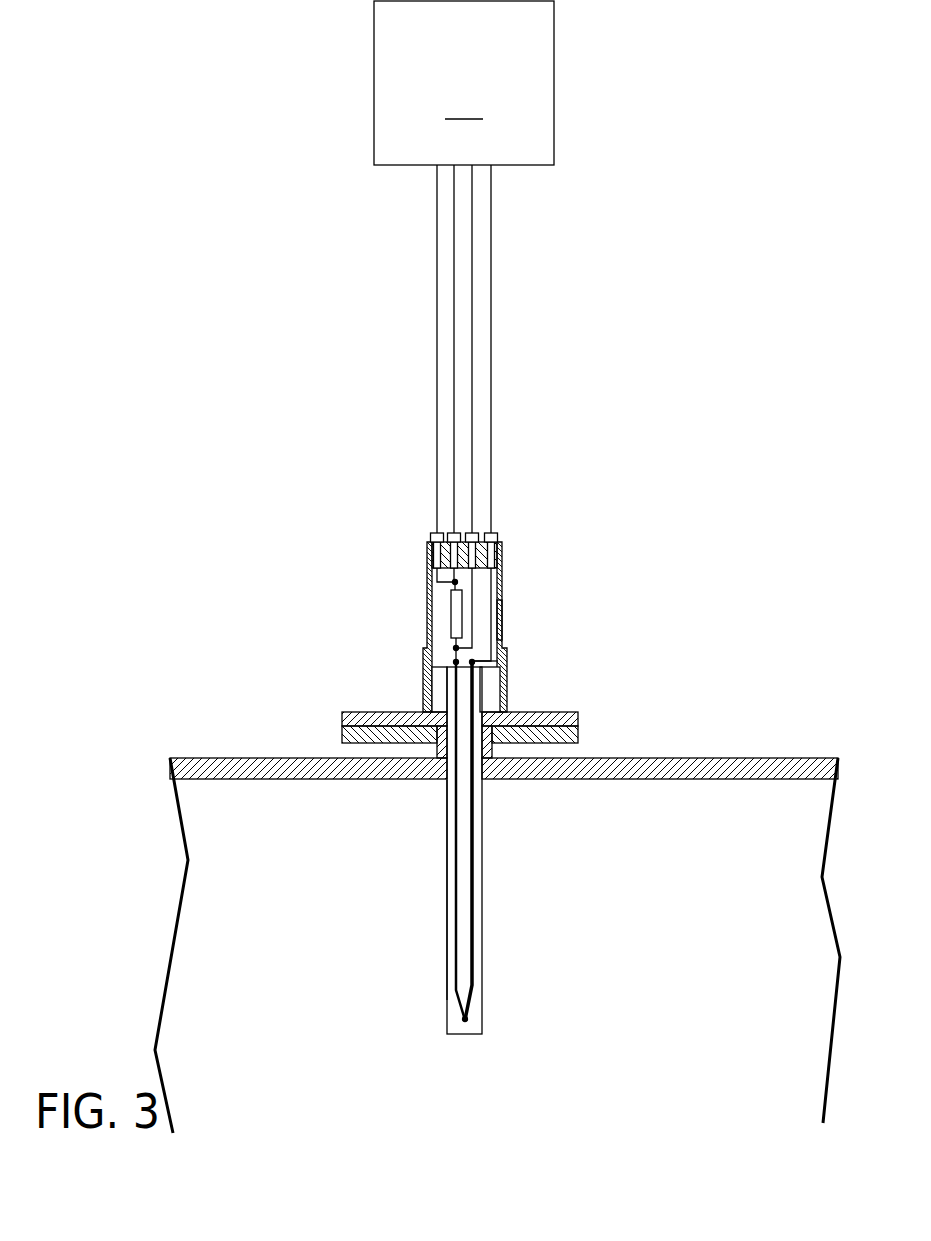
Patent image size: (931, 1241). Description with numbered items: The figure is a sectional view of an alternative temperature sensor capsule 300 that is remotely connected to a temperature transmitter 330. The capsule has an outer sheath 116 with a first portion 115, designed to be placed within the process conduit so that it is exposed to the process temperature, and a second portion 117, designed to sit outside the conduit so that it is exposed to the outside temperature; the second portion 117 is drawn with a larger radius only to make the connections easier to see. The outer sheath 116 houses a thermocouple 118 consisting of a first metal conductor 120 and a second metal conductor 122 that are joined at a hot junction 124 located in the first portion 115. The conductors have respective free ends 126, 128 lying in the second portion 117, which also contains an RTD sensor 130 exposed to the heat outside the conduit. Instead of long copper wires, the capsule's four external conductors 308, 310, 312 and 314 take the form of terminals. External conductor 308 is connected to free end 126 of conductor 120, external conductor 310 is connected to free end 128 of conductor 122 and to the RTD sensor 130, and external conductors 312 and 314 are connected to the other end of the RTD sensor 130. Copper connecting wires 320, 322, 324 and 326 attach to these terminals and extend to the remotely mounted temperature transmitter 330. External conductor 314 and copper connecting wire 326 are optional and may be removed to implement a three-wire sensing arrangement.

The temperature transmitter 330 is at (464, 83).
The copper connecting wire 320 is at (491, 328).
The copper connecting wire 322 is at (472, 272).
The copper connecting wire 324 is at (454, 240).
The copper connecting wire 326 is at (437, 306).
The external conductor 308 is at (502, 540).
The external conductor 310 is at (491, 533).
The external conductor 312 is at (437, 533).
The external conductor 314 is at (430, 539).
The temperature sensor capsule 300 is at (520, 589).
The outer sheath 116 is at (427, 576).
The second portion 117 is at (502, 620).
The RTD sensor 130 is at (452, 614).
The free end 128 is at (454, 665).
The free end 126 is at (474, 661).
The second metal conductor 122 is at (455, 806).
The first metal conductor 120 is at (481, 812).
The first portion 115 is at (448, 864).
The thermocouple 118 is at (464, 848).
The hot junction 124 is at (467, 1018).